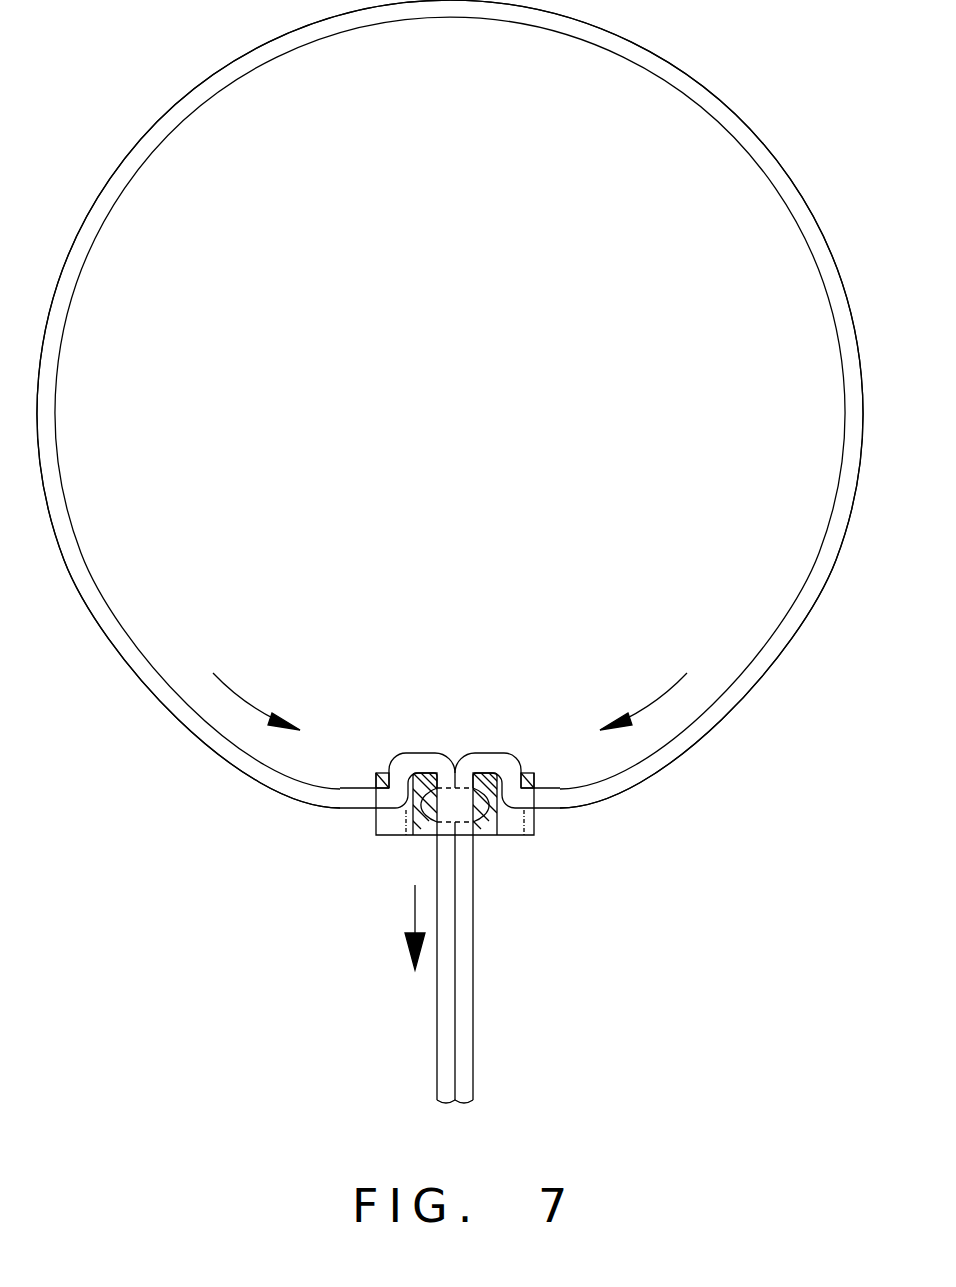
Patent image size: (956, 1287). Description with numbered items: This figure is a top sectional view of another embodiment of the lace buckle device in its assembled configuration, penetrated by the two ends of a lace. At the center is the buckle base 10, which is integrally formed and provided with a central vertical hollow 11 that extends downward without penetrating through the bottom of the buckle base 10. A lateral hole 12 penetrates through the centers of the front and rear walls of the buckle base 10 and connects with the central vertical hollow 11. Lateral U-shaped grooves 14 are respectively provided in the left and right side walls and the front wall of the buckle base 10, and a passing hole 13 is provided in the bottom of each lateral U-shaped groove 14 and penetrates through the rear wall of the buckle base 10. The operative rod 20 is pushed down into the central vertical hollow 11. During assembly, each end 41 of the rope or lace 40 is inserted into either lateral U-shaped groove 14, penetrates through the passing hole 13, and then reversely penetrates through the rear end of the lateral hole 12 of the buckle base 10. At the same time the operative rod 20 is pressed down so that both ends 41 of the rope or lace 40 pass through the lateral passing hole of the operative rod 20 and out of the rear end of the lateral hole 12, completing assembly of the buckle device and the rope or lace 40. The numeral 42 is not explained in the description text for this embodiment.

The rope or lace 40 is at (670, 776).
The end of rope or lace 41 is at (469, 1005).
The ring rim 42 is at (786, 181).
The buckle base 10 is at (368, 764).
The central vertical hollow 11 is at (481, 830).
The lateral hole 12 is at (437, 834).
The passing hole 13 is at (519, 772).
The lateral U-shaped groove 14 is at (511, 828).
The operative rod 20 is at (462, 788).